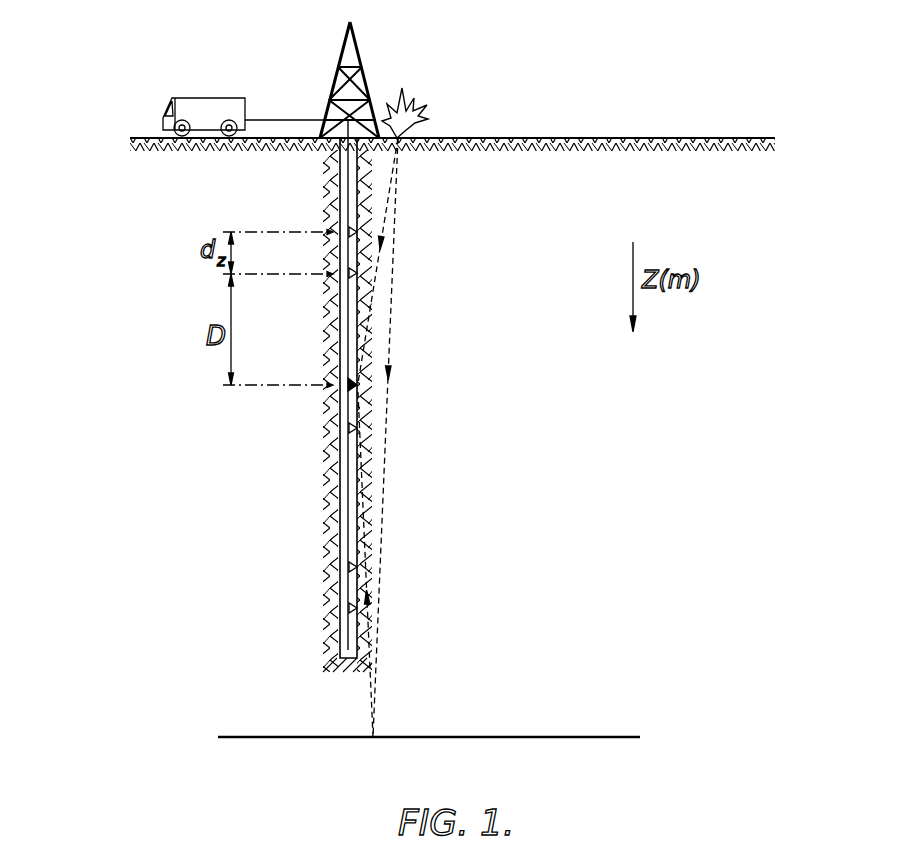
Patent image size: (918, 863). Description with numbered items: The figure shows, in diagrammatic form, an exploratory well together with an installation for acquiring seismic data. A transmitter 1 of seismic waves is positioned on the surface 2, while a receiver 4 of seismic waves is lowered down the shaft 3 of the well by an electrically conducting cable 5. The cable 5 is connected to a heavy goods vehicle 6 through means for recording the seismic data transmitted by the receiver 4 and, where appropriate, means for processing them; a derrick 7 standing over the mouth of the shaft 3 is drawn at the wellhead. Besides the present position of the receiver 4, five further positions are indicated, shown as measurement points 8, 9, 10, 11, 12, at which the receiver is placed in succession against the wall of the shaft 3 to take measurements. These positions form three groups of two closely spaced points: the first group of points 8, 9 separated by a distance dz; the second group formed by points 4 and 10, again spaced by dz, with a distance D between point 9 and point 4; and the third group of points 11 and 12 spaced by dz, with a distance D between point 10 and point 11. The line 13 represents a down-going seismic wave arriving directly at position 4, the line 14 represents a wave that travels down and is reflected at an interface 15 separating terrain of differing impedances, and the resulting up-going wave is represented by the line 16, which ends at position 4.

The transmitter of seismic waves 1 is at (404, 93).
The surface 2 is at (502, 137).
The shaft of the well 3 is at (336, 495).
The receiver of seismic waves 4 is at (354, 383).
The electrically conducting cable 5 is at (347, 188).
The heavy goods vehicle 6 is at (210, 104).
The derrick 7 is at (355, 62).
The measurement point 8 is at (357, 232).
The measurement point 9 is at (357, 272).
The measurement point 10 is at (357, 428).
The measurement point 11 is at (357, 566).
The measurement point 12 is at (357, 612).
The line representing down-going seismic wave 13 is at (372, 307).
The line representing reflected seismic wave 14 is at (386, 466).
The interface 15 is at (573, 735).
The line representing up-going wave 16 is at (364, 511).